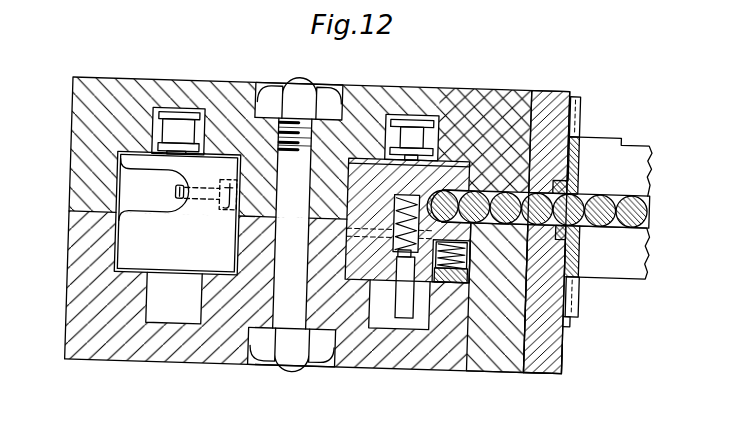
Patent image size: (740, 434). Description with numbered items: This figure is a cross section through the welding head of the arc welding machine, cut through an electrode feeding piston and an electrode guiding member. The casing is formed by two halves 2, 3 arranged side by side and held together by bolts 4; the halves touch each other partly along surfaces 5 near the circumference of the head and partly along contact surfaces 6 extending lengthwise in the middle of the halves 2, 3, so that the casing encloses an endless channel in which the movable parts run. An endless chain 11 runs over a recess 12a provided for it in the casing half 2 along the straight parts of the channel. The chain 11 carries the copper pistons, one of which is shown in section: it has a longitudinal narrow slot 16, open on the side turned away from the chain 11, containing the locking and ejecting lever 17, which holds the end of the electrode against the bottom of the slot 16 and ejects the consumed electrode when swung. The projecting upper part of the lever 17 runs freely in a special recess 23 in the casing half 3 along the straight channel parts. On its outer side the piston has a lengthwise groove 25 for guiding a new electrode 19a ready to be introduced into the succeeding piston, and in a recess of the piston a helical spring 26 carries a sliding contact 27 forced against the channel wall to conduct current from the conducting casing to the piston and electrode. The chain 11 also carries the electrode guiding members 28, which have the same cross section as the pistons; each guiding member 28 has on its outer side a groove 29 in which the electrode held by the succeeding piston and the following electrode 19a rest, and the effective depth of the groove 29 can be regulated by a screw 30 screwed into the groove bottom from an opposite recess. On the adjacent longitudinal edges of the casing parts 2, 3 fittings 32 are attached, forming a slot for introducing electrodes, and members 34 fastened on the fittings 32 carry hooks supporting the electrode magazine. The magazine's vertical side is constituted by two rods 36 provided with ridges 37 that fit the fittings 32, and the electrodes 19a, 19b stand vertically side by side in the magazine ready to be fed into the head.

The casing half 2 is at (337, 134).
The casing half 3 is at (250, 302).
The bolt 4 is at (300, 171).
The contact surface 5 is at (104, 209).
The contact surface 6 is at (254, 211).
The endless chain 11 is at (182, 125).
The recess 12a is at (158, 124).
The slot 16 is at (352, 239).
The locking and ejecting lever 17 is at (404, 287).
The electrode 19a is at (489, 215).
The electrode 19b is at (566, 358).
The recess 23 is at (180, 295).
The groove 25 is at (538, 94).
The helical spring 26 is at (466, 269).
The sliding contact 27 is at (452, 261).
The electrode guiding member 28 is at (147, 257).
The groove 29 is at (159, 170).
The screw 30 is at (229, 207).
The fitting 32 is at (557, 319).
The member 34 is at (578, 100).
The vertical side rod 36 is at (625, 147).
The ridge 37 is at (582, 140).